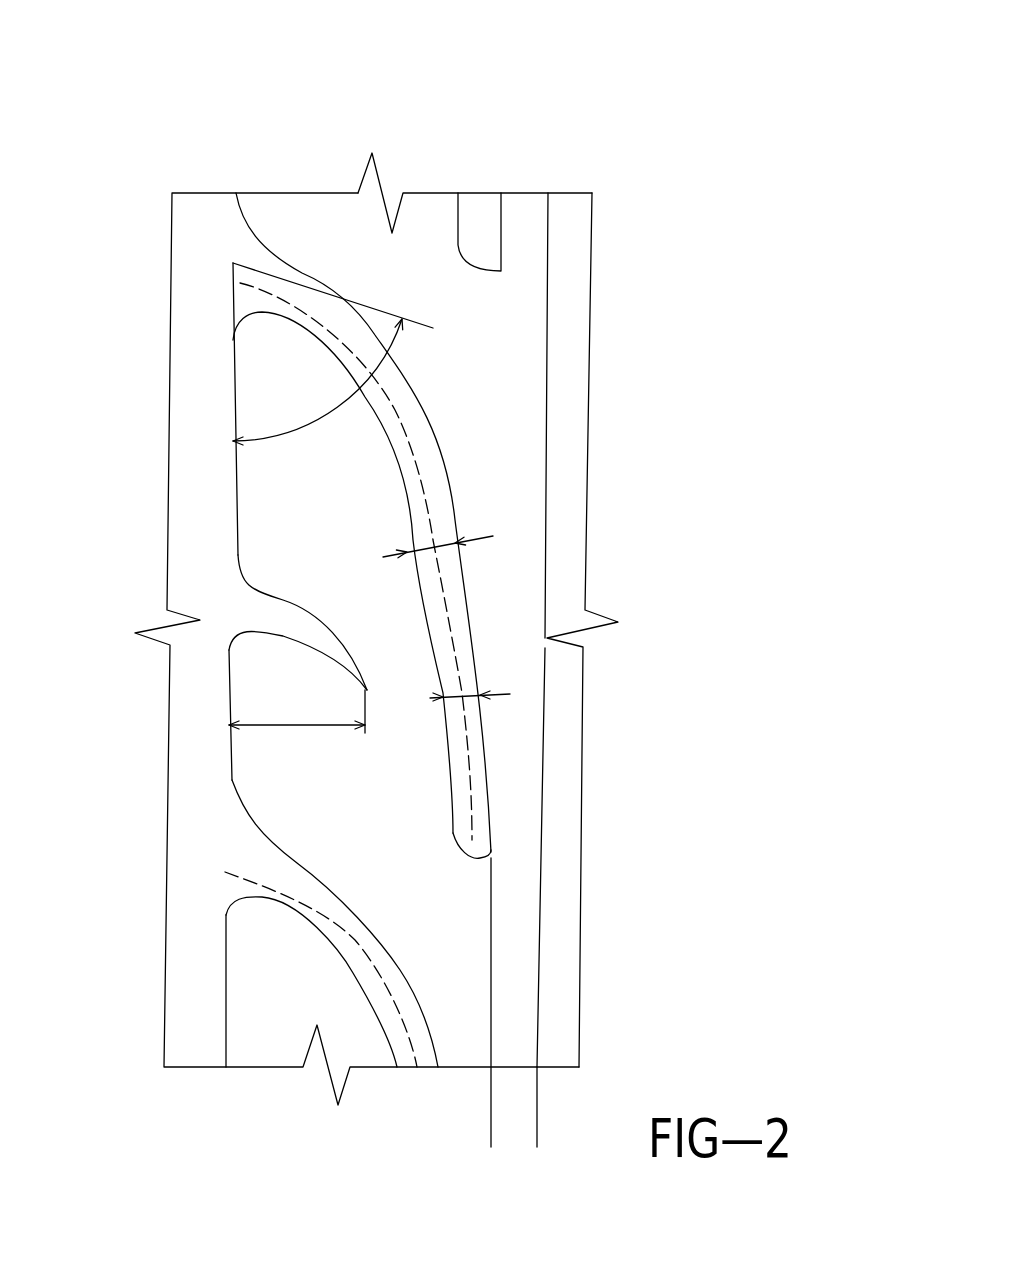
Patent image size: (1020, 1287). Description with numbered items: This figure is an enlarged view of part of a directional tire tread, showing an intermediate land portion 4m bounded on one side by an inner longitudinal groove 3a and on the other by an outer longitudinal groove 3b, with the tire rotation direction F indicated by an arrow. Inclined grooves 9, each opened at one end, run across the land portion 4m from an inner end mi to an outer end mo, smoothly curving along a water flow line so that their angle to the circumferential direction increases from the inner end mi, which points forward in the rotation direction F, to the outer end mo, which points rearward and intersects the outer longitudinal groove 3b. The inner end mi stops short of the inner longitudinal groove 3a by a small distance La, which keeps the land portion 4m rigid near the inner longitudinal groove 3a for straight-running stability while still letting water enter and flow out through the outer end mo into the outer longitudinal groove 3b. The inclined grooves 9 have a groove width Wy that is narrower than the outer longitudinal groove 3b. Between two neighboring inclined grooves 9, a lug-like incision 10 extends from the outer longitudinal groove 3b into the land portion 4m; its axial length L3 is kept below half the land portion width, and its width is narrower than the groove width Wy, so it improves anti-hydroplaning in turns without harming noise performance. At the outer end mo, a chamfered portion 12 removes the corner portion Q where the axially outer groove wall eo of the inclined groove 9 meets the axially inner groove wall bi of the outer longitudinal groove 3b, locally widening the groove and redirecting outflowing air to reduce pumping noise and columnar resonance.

The inner longitudinal groove 3a is at (570, 210).
The outer longitudinal groove 3b is at (186, 215).
The intermediate land portion 4m is at (553, 177).
The inclined groove 9 is at (490, 785).
The lug-like incision 10 is at (290, 618).
The chamfered portion 12 is at (256, 306).
The corner portion Q is at (225, 327).
The length of the incision L3 is at (295, 728).
The groove width of the inclined groove Wy is at (452, 545).
The small distance La is at (570, 1138).
The inner end mi is at (507, 852).
The outer end mo is at (265, 222).
The tire rotation direction F is at (640, 355).
The axially outer groove wall of the inclined groove eo is at (378, 998).
The axially inner groove wall of the outer longitudinal groove bi is at (225, 1037).